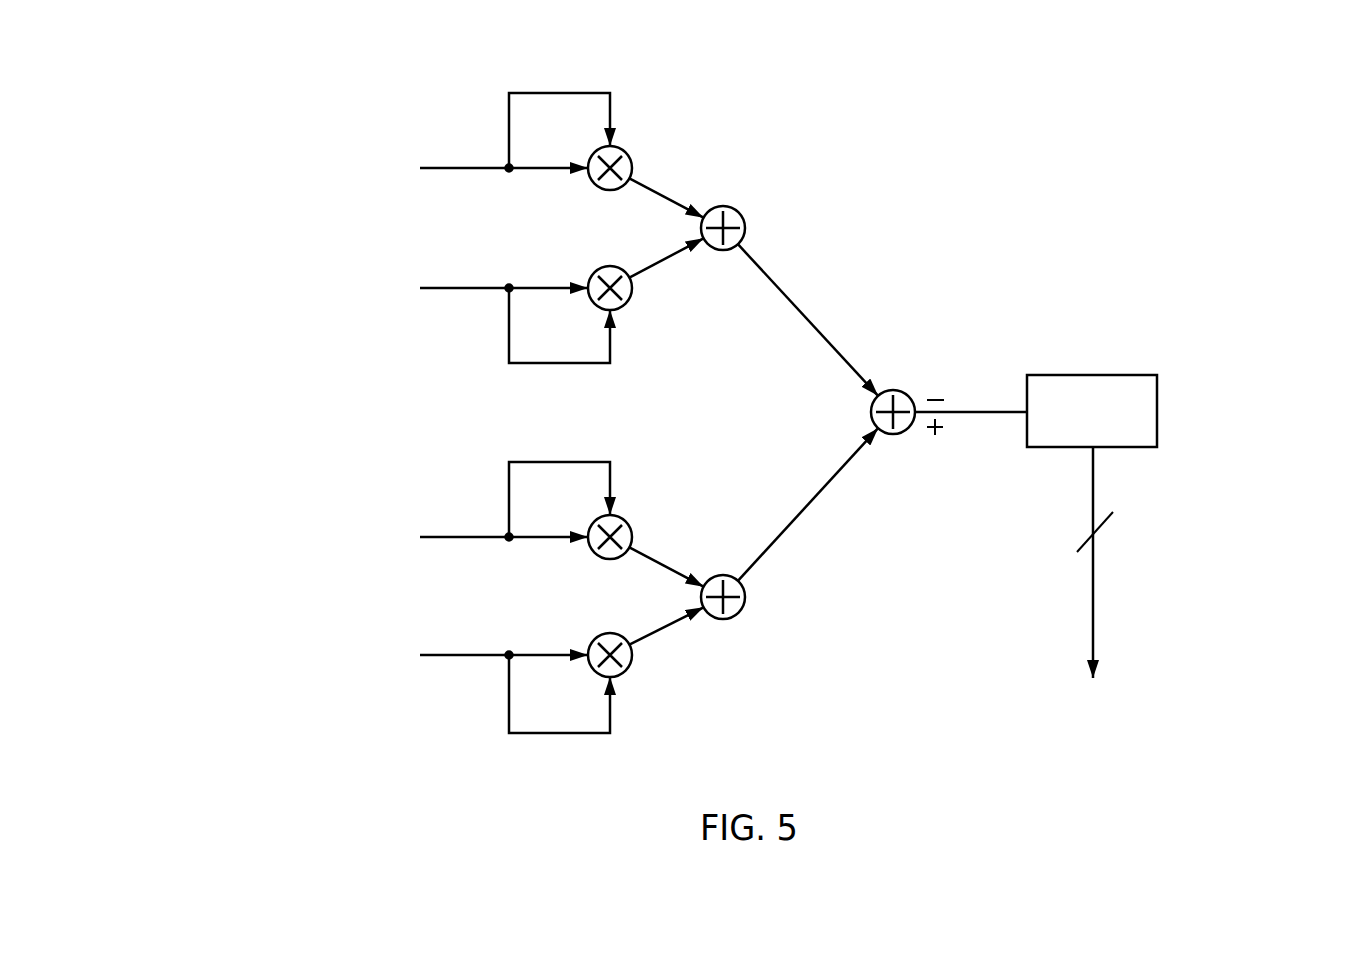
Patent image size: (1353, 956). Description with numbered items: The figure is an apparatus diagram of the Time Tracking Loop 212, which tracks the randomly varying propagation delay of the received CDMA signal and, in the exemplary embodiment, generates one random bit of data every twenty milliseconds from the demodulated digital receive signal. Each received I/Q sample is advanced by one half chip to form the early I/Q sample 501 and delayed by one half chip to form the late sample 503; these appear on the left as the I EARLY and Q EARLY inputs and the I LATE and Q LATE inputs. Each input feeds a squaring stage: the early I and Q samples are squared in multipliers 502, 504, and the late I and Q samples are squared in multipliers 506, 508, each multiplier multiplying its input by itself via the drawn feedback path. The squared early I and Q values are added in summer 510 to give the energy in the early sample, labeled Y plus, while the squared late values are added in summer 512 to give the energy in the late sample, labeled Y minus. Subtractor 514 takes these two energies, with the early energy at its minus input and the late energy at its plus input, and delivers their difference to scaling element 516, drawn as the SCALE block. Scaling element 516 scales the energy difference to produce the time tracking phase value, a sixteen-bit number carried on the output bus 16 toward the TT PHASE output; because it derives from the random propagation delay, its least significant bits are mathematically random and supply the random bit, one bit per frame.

The Time Tracking Loop 212 is at (260, 88).
The early I/Q sample 501 is at (368, 192).
The multiplier 502 is at (624, 151).
The multiplier 504 is at (624, 305).
The multiplier 506 is at (624, 520).
The multiplier 508 is at (624, 672).
The late sample 503 is at (368, 560).
The summer 510 is at (725, 206).
The summer 512 is at (726, 619).
The subtractor 514 is at (900, 391).
The scaling element 516 is at (1093, 375).
The 16-bit output bus width 16 is at (1105, 562).